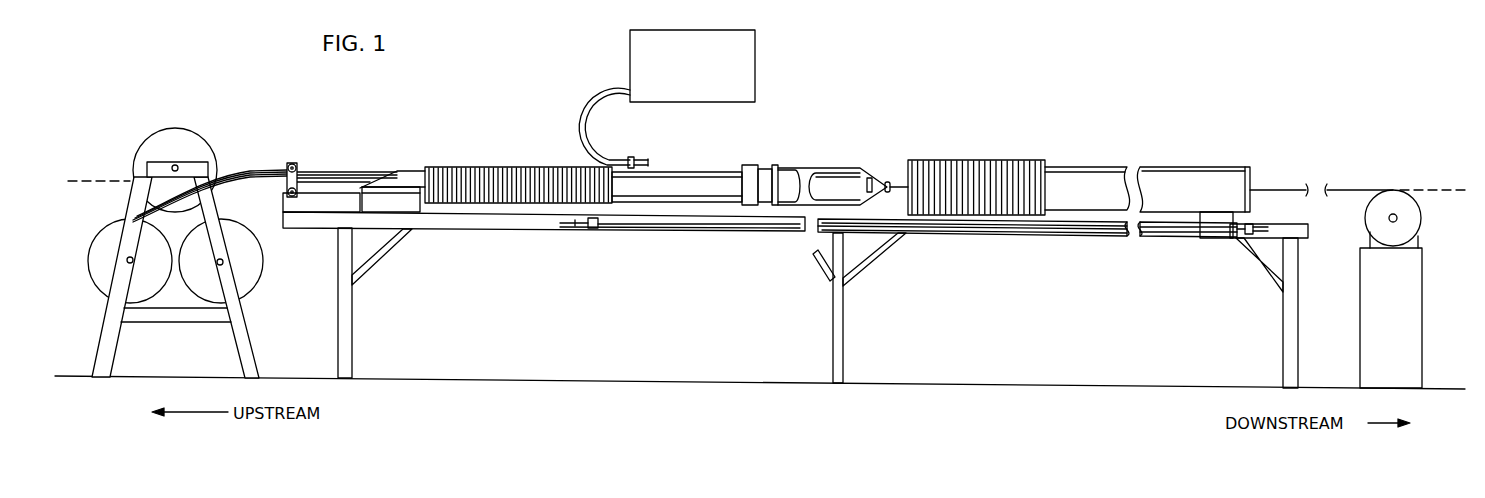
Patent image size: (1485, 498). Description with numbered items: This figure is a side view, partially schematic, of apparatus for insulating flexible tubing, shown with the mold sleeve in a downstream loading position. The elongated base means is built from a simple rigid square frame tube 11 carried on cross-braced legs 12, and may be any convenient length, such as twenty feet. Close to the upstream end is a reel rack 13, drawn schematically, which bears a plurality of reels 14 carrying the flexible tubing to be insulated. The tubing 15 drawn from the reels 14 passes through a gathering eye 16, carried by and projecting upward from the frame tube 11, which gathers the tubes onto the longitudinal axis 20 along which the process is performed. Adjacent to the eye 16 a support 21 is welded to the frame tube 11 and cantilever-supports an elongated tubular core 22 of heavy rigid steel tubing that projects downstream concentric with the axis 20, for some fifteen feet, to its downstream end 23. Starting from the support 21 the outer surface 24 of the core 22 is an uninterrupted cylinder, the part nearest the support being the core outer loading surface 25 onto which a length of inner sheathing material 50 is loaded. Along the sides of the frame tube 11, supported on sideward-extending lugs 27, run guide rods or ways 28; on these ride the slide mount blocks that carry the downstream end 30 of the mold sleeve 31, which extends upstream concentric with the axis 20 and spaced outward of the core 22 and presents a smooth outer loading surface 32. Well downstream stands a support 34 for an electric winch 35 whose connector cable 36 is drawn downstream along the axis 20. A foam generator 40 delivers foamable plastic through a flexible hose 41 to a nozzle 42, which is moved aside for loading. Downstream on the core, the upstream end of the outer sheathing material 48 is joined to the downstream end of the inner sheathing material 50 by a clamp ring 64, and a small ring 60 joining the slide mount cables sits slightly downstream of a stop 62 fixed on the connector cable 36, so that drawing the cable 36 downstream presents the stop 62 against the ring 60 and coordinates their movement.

The frame tube 11 is at (508, 232).
The cross-braced legs 12 is at (353, 311).
The reel rack 13 is at (134, 206).
The reels 14 is at (198, 128).
The tubing 15 is at (273, 172).
The gathering eye 16 is at (297, 166).
The longitudinal axis 20 is at (101, 181).
The support 21 is at (403, 213).
The core 22 is at (414, 163).
The downstream end of core 23 is at (832, 207).
The outer surface of core 24 is at (717, 172).
The core outer loading surface 25 is at (612, 190).
The lugs 27 is at (590, 233).
The ways 28 is at (1030, 237).
The downstream end of mold sleeve 30 is at (1238, 167).
The mold sleeve 31 is at (1132, 158).
The outer loading surface 32 is at (1055, 167).
The support 34 is at (1405, 293).
The winch 35 is at (1423, 185).
The connector cable 36 is at (805, 176).
The foam generator 40 is at (757, 69).
The flexible hose 41 is at (581, 135).
The nozzle 42 is at (645, 160).
The outer sheathing material 48 is at (980, 160).
The inner sheathing material 50 is at (533, 167).
The ring 60 is at (889, 183).
The stop 62 is at (870, 178).
The clamp ring 64 is at (762, 166).